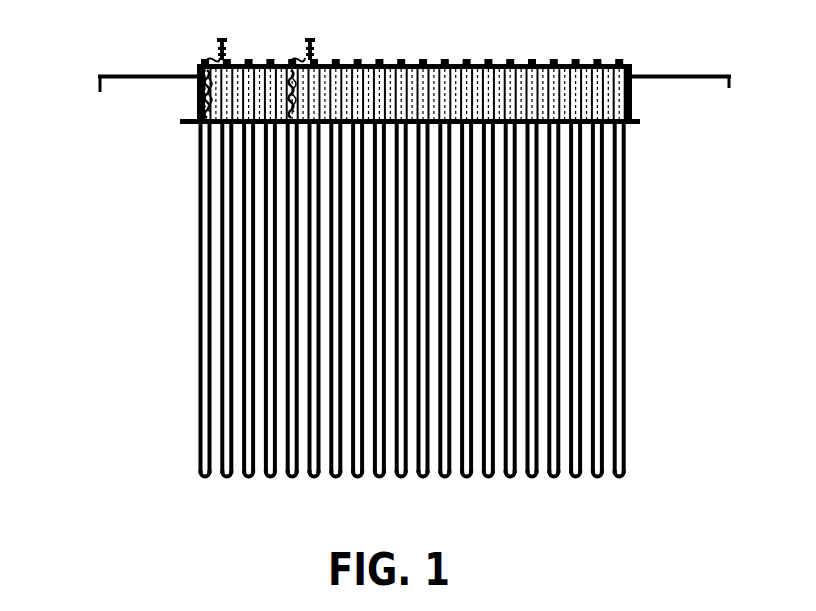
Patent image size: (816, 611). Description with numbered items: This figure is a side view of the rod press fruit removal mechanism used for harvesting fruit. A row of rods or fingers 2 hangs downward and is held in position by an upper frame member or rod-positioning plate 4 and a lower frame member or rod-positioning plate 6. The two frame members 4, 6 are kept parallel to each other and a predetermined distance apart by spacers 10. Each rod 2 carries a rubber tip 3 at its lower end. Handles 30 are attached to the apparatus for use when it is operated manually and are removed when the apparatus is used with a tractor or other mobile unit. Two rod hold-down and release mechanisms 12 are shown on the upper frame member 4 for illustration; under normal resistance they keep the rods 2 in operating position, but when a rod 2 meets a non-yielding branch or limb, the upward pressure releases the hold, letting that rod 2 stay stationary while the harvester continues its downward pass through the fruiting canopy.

The rods or fingers 2 is at (443, 59).
The rubber tip 3 is at (271, 480).
The upper frame member or rod-positioning plate 4 is at (632, 64).
The lower frame member or rod-positioning plate 6 is at (641, 123).
The spacers 10 is at (197, 100).
The rod hold-down and release mechanisms 12 is at (212, 58).
The handles 30 is at (110, 92).